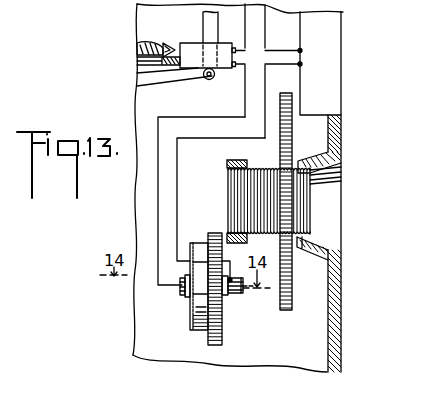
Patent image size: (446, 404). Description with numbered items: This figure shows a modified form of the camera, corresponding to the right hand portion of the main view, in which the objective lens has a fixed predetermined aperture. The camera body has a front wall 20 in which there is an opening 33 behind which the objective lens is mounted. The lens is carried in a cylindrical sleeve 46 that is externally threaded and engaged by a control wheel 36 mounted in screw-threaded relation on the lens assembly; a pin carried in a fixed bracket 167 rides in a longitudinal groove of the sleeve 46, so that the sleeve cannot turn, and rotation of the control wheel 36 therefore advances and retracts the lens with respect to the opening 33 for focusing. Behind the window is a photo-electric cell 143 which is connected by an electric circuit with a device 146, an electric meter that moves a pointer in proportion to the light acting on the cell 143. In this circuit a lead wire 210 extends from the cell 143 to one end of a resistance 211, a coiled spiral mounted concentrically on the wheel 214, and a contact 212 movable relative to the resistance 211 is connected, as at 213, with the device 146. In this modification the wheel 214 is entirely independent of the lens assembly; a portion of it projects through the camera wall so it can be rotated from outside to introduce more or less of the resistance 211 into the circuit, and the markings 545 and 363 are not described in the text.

The photo-electric cell 143 is at (332, 43).
The device 146 is at (217, 73).
The cylindrical sleeve 46 is at (267, 168).
The opening 33 is at (341, 173).
The control wheel 36 is at (292, 288).
The front wall 20 is at (341, 315).
The fixed bracket 167 is at (227, 162).
The connection 213 is at (158, 183).
The lead wire 210 is at (177, 201).
The contact 212 is at (183, 292).
The resistance 211 is at (192, 317).
The wheel 214 is at (223, 335).
The gear hub 545 is at (200, 256).
The gear hub 363 is at (201, 288).